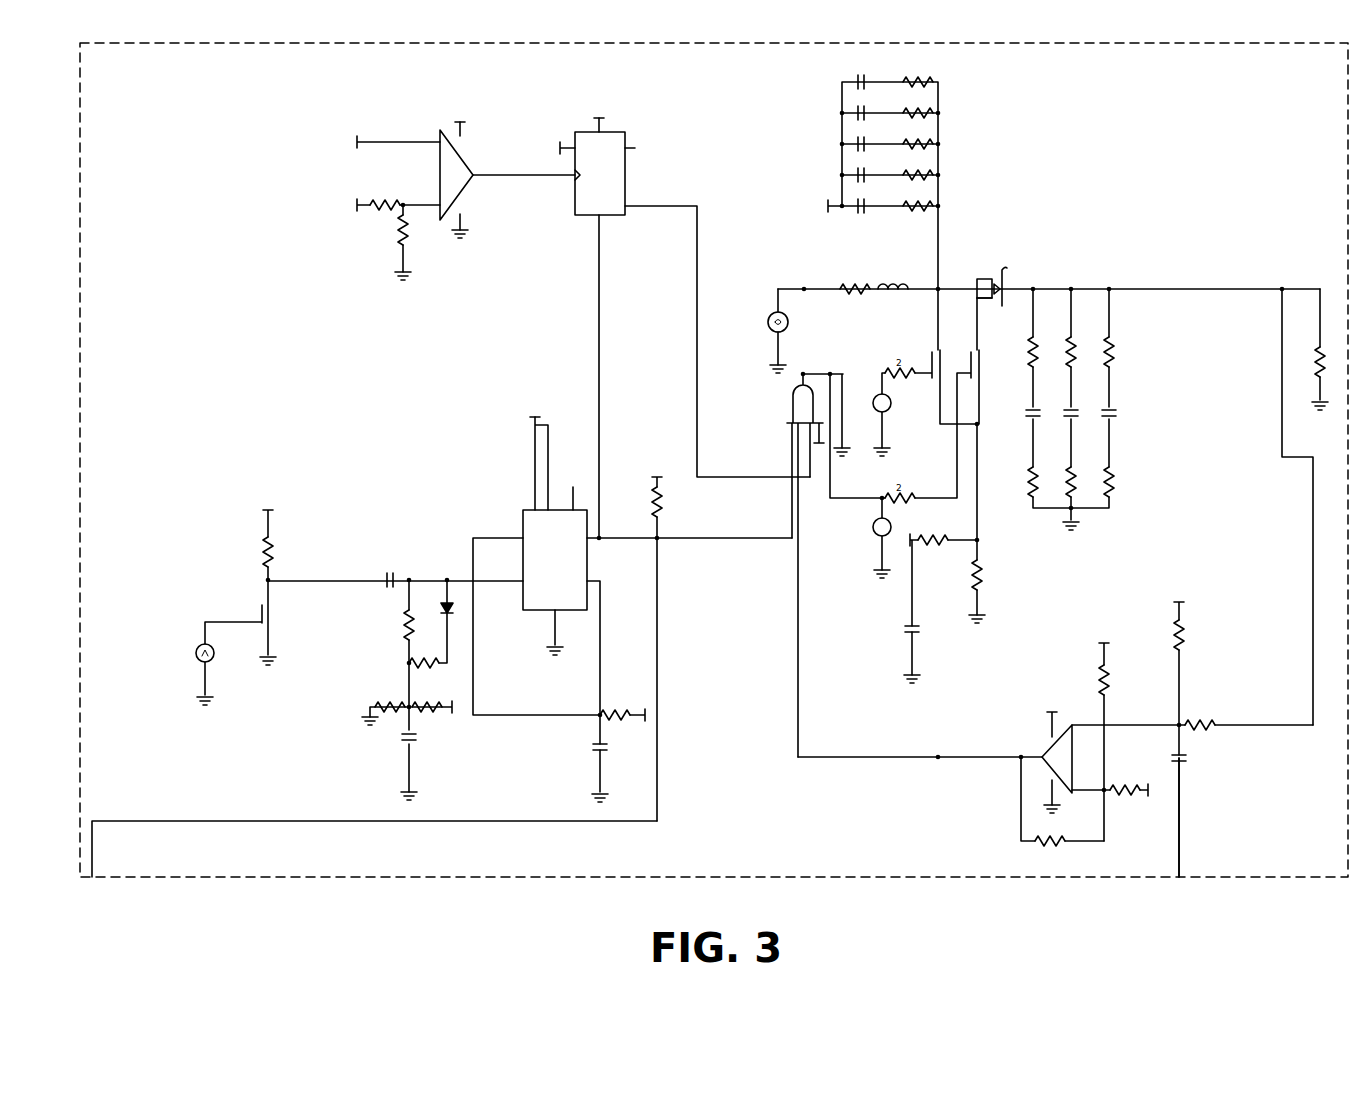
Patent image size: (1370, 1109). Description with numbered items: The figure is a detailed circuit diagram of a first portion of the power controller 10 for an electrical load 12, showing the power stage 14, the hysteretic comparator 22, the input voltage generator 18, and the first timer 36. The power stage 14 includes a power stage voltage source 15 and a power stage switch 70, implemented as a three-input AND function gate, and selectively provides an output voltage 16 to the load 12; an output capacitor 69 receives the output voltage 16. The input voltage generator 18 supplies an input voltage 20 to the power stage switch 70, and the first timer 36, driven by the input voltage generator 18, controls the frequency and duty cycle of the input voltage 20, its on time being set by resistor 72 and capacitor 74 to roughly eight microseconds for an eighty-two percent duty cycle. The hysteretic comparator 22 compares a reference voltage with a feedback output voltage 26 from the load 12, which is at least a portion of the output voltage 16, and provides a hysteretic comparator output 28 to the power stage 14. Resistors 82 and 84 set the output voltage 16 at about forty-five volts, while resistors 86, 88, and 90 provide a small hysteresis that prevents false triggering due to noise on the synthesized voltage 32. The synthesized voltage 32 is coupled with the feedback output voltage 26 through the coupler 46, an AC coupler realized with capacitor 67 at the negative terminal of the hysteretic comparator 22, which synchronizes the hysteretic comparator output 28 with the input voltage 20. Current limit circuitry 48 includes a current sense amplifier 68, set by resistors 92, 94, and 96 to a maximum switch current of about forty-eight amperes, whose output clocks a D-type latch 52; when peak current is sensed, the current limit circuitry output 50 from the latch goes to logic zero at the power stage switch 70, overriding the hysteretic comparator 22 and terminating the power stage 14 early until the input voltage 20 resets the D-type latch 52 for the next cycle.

The power controller 10 is at (1105, 136).
The electrical load 12 is at (1200, 250).
The power stage 14 is at (764, 255).
The power stage voltage source 15 is at (770, 333).
The output voltage 16 is at (1284, 272).
The input voltage generator 18 is at (222, 588).
The input voltage 20 is at (601, 410).
The hysteretic comparator 22 is at (1072, 725).
The feedback output voltage 26 is at (1313, 636).
The hysteretic comparator output 28 is at (963, 748).
The synthesized voltage 32 is at (1181, 852).
The first timer 36 is at (523, 513).
The coupler 46 is at (1185, 762).
The current limit circuitry 48 is at (570, 265).
The current limit circuitry output 50 is at (697, 307).
The D-type latch 52 is at (626, 176).
The capacitor 67 is at (1249, 756).
The current sense amplifier 68 is at (440, 135).
The output capacitor 69 is at (1111, 412).
The power stage switch 70 is at (796, 408).
The resistor 72 is at (632, 712).
The capacitor 74 is at (599, 750).
The resistor 82 is at (1181, 622).
The resistor 84 is at (1212, 727).
The resistor 86 is at (1135, 790).
The resistor 88 is at (1104, 665).
The resistor 90 is at (1040, 845).
The resistor 92 is at (400, 235).
The resistor 94 is at (373, 207).
The resistor 96 is at (978, 565).